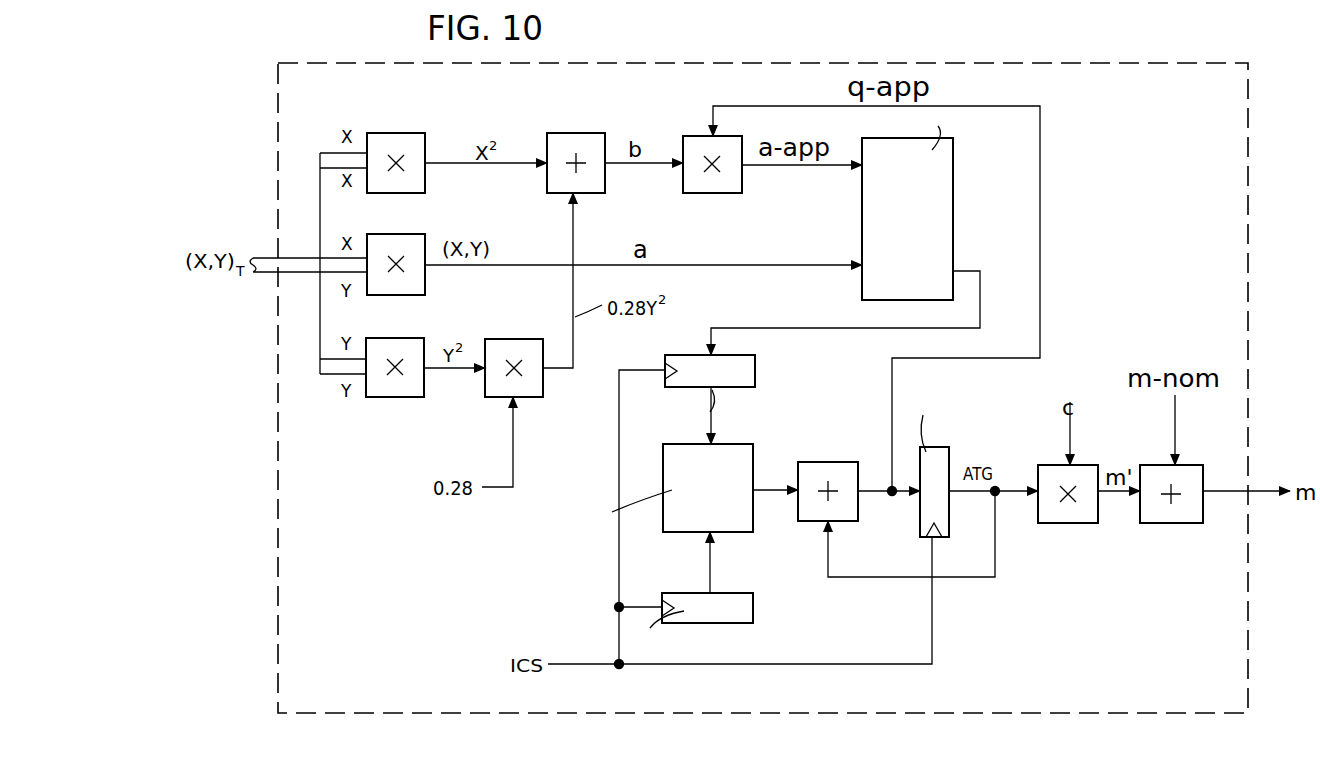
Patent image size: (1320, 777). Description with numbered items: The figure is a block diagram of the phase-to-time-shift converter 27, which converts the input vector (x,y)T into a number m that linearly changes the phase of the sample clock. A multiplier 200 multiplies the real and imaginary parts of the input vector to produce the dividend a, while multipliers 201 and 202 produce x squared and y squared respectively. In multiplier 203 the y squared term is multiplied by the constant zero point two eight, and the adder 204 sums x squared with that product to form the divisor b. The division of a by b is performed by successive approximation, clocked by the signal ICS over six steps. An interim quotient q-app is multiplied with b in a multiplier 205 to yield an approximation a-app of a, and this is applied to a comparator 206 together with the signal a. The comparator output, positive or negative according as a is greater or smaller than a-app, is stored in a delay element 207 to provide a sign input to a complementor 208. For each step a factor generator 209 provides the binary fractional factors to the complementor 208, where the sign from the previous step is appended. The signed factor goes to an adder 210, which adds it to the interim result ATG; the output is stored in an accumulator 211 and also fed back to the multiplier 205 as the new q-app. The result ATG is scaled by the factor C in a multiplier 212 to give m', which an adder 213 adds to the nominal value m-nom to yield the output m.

The phase-to-time-shift converter 27 is at (792, 63).
The multiplier 200 is at (413, 238).
The multiplier 201 is at (395, 138).
The multiplier 202 is at (385, 392).
The multiplier 203 is at (518, 343).
The adder 204 is at (575, 133).
The multiplier 205 is at (706, 193).
The comparator 206 is at (945, 195).
The delay element 207 is at (753, 368).
The complementor 208 is at (748, 455).
The factor generator 209 is at (753, 607).
The adder 210 is at (845, 515).
The accumulator 211 is at (930, 452).
The multiplier 212 is at (1068, 518).
The adder 213 is at (1175, 518).